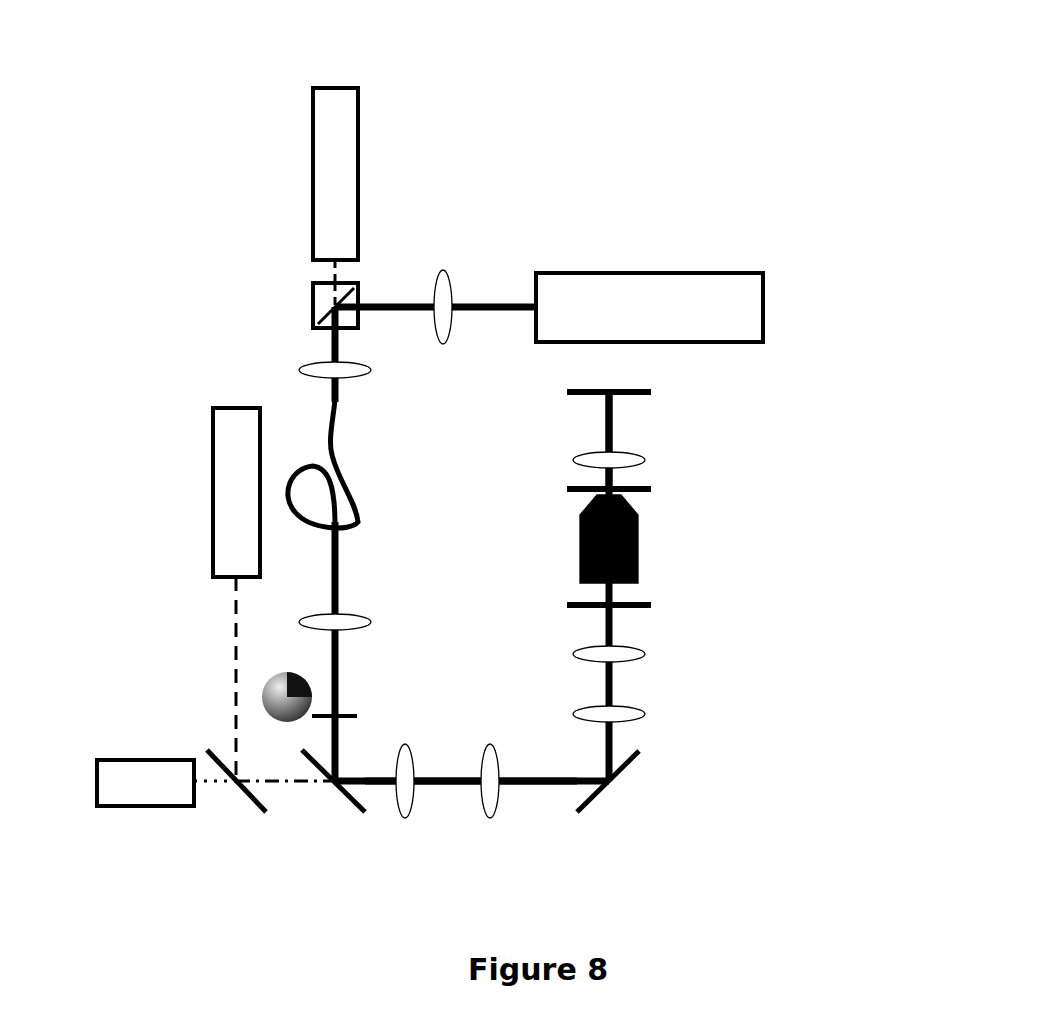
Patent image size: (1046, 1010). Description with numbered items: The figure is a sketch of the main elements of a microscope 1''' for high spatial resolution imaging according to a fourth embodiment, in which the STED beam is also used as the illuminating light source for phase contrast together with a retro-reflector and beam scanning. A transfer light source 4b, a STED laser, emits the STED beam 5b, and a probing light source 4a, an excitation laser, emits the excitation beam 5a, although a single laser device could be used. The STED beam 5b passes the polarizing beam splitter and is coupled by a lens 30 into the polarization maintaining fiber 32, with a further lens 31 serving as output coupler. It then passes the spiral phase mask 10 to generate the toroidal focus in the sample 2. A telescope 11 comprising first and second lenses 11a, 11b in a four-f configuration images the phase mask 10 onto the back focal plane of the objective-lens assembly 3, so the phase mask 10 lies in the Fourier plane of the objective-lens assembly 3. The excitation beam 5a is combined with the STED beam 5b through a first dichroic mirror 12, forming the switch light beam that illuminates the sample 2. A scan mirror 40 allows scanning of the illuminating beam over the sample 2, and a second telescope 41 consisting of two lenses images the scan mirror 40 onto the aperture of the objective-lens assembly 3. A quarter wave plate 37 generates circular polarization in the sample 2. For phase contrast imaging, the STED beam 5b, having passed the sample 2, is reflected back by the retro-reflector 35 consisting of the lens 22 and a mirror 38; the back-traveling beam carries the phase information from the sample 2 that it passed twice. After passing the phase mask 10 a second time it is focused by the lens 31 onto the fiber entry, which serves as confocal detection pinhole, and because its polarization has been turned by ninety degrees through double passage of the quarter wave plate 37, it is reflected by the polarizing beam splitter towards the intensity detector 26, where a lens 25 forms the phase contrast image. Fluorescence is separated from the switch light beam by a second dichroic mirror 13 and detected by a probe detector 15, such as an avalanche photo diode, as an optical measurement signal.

The microscope 1''' is at (492, 416).
The transfer light source 4b is at (366, 142).
The STED beam 5b is at (387, 192).
The probing light source 4a is at (213, 487).
The excitation beam 5a is at (233, 628).
The lens 25 is at (447, 276).
The intensity detector 26 is at (621, 273).
The lens 30 is at (316, 368).
The mirror 38 is at (586, 390).
The retro-reflector 35 is at (710, 406).
The lens 22 is at (586, 462).
The sample 2 is at (645, 492).
The objective-lens assembly 3 is at (581, 550).
The quarter wave plate 37 is at (581, 605).
The second telescope 41 is at (657, 681).
The scan mirror 40 is at (584, 800).
The polarization maintaining fiber 32 is at (362, 525).
The lens 31 is at (318, 617).
The phase mask 10 is at (250, 682).
The first dichroic mirror 12 is at (208, 752).
The second dichroic mirror 13 is at (347, 800).
The probe detector 15 is at (125, 800).
The telescope 11 is at (445, 841).
The first lens 11a is at (410, 746).
The second lens 11b is at (492, 746).